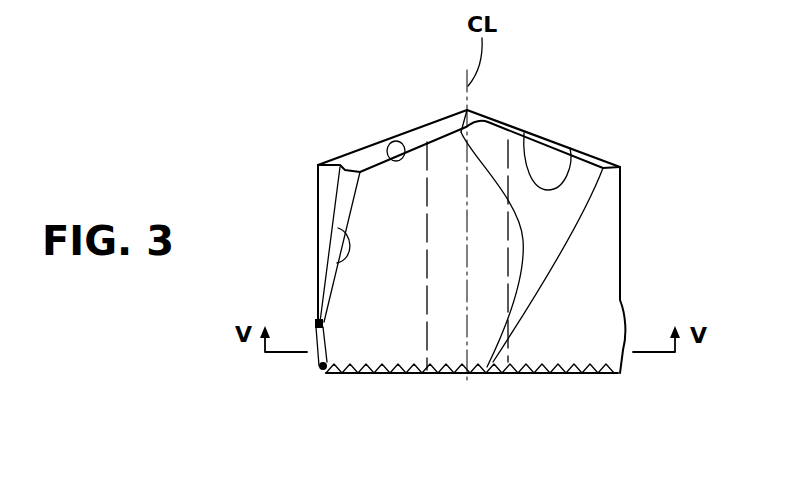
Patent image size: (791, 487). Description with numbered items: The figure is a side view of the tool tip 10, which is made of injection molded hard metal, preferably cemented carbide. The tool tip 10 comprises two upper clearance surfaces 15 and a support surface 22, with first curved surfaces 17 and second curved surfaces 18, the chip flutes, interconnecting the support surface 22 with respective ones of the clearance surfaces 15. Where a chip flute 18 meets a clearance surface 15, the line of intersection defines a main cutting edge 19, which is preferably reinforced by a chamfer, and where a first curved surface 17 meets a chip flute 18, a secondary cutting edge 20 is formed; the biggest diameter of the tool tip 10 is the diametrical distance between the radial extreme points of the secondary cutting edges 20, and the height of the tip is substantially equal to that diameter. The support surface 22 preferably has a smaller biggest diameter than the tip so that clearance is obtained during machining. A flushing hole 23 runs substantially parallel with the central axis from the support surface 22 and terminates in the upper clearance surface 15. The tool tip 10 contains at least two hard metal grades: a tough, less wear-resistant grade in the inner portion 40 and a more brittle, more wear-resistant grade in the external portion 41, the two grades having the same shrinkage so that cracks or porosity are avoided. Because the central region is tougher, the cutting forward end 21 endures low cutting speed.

The tool tip 10 is at (618, 105).
The upper clearance surface 15 is at (410, 150).
The first curved surface 17 is at (318, 206).
The second curved surface (chip flute) 18 is at (378, 317).
The main cutting edge 19 is at (401, 141).
The secondary cutting edge 20 is at (343, 265).
The cutting forward end 21 is at (473, 107).
The support surface 22 is at (553, 375).
The flushing hole 23 is at (547, 165).
The inner portion 40 is at (427, 322).
The external portion 41 is at (590, 257).